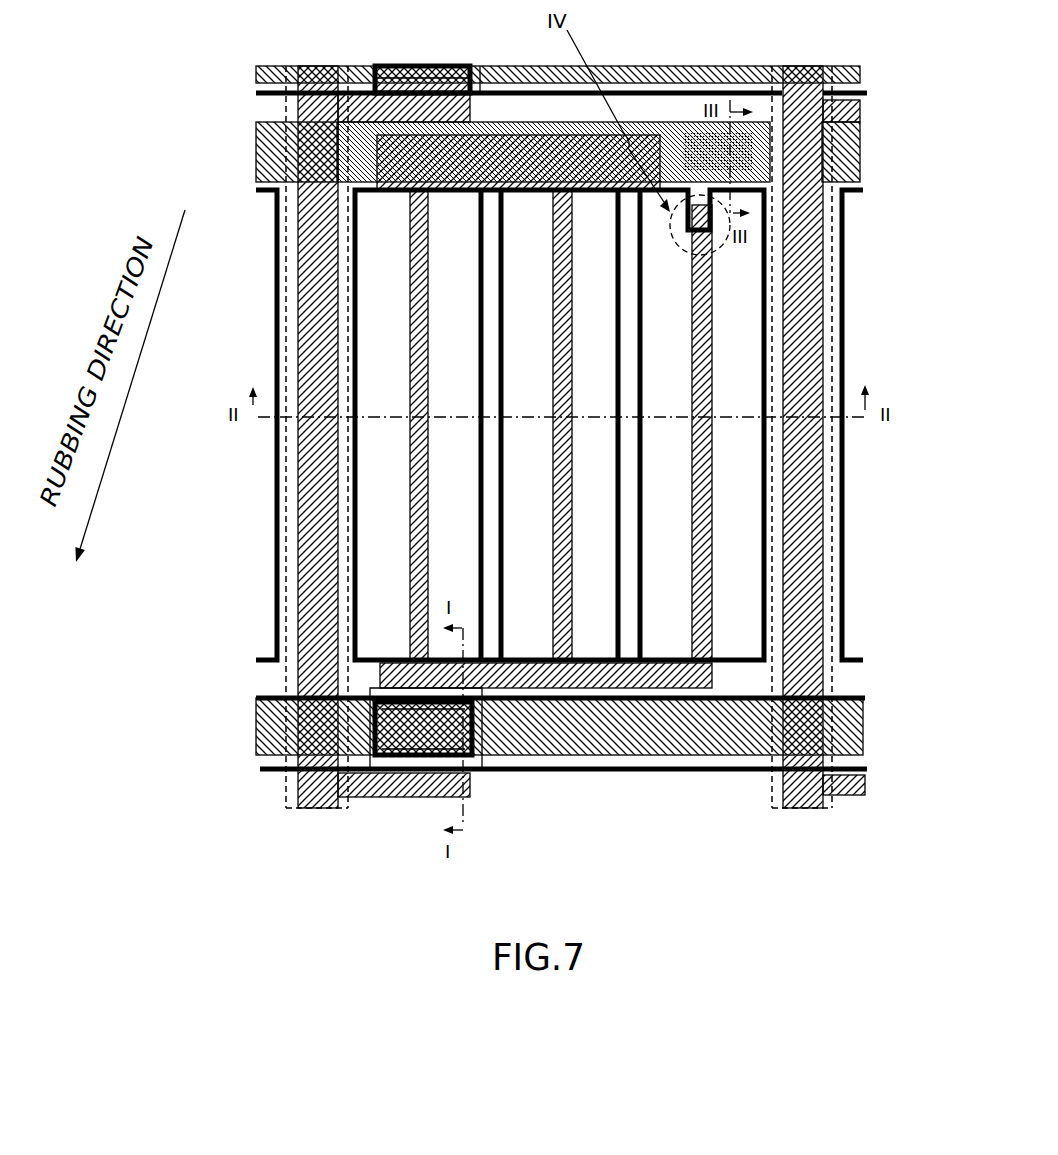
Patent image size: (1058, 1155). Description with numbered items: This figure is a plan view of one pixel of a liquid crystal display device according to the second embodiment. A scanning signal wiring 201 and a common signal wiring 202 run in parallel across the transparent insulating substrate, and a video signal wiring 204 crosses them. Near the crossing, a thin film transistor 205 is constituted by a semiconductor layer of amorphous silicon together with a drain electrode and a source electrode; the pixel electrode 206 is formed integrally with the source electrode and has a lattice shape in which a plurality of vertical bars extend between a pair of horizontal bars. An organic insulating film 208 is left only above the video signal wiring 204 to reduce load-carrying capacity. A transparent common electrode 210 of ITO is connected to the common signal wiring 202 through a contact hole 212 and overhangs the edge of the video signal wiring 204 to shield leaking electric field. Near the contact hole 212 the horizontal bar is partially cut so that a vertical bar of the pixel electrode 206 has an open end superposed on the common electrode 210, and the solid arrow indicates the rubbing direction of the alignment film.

The scanning signal wiring 201 is at (268, 728).
The common signal wiring 202 is at (238, 143).
The video signal wiring 204 is at (310, 787).
The thin film transistor 205 is at (390, 771).
The pixel electrode 206 is at (713, 520).
The insulating film 208 is at (280, 481).
The common electrode 210 is at (842, 250).
The contact hole 212 is at (748, 157).